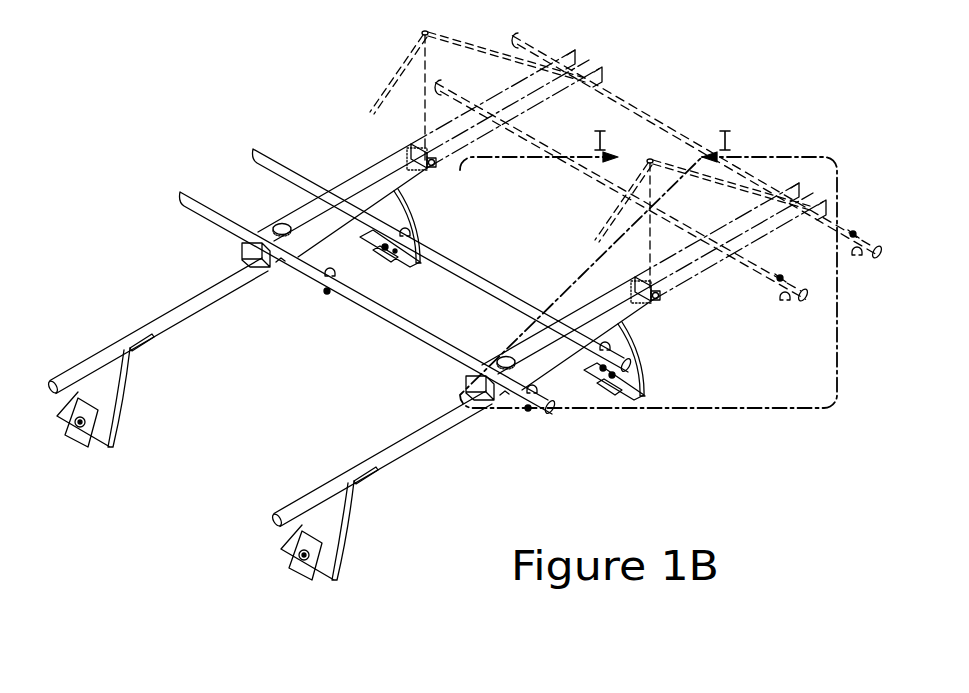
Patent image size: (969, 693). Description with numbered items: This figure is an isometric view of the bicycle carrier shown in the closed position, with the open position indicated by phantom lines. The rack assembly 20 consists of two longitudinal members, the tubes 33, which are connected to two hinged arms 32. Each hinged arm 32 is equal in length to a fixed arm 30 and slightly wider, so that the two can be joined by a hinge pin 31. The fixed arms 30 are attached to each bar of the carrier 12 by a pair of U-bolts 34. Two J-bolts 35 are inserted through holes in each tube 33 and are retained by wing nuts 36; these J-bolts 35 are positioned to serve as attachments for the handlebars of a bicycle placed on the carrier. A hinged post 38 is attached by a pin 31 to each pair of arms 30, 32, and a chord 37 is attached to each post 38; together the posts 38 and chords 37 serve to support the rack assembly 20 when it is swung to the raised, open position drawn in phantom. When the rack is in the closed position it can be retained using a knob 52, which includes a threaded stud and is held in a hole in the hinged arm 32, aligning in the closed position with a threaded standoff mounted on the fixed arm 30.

The carrier 12 is at (290, 504).
The rack assembly 20 is at (640, 100).
The fixed arm 30 is at (252, 259).
The hinge pin 31 is at (437, 165).
The hinged arm 32 is at (360, 184).
The tube 33 is at (262, 156).
The U-bolt 34 is at (415, 185).
The J-bolt 35 is at (410, 233).
The wing nut 36 is at (385, 249).
The chord 37 is at (456, 44).
The hinged post 38 is at (423, 108).
The knob 52 is at (280, 225).